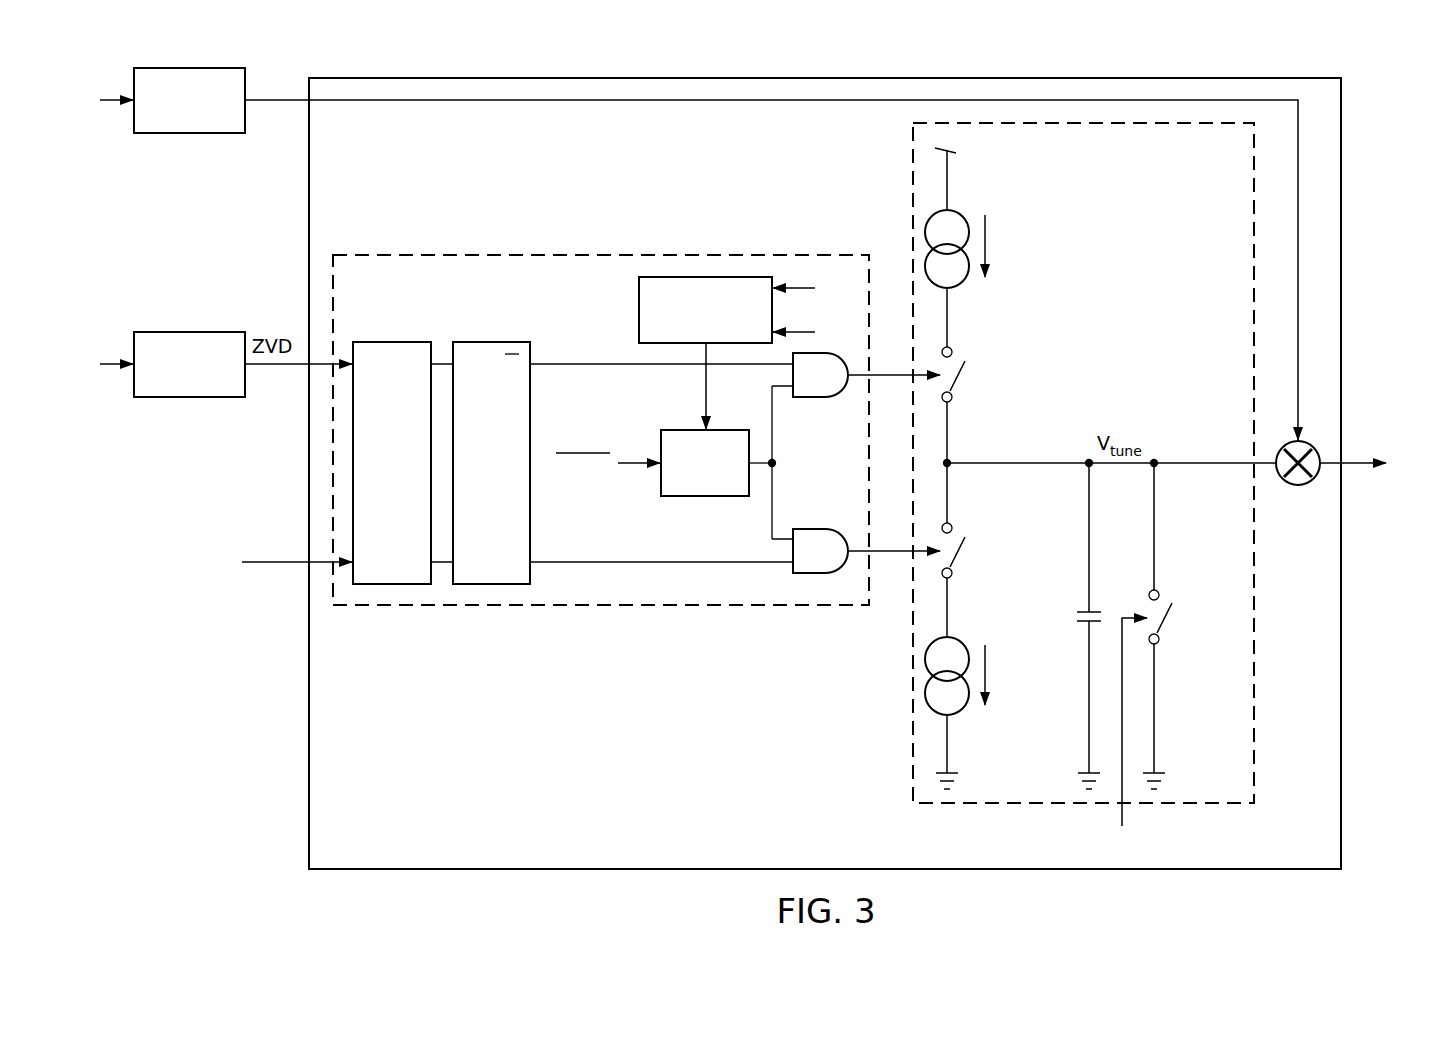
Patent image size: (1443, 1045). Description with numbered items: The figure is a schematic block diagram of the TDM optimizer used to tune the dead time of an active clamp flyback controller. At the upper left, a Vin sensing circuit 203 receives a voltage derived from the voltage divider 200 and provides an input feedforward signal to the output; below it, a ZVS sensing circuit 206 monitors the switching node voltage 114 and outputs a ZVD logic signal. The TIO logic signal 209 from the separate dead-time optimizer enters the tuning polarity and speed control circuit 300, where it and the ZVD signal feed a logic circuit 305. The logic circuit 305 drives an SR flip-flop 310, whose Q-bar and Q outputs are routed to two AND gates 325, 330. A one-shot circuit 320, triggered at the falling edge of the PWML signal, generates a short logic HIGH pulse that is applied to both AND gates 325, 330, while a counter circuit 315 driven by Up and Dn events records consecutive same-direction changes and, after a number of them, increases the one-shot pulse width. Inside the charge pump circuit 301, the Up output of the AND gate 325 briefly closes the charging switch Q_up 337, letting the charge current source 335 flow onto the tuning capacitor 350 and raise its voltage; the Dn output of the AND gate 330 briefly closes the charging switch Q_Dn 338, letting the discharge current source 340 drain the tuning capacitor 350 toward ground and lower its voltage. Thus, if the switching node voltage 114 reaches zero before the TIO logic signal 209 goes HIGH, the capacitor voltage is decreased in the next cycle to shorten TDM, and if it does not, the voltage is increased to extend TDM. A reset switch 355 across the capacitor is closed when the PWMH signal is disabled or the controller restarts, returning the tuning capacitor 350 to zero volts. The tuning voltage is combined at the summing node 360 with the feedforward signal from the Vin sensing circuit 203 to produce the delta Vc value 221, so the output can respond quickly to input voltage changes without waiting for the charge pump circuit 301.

The voltage divider 200 is at (112, 100).
The Vin sensing circuit 203 is at (188, 68).
The switching node voltage 114 is at (112, 364).
The ZVS sensing circuit 206 is at (188, 332).
The timeout (TIO) logic signal 209 is at (277, 565).
The tuning polarity and speed control circuit 300 is at (548, 253).
The logic circuit 305 is at (373, 491).
The SR flip-flop 310 is at (472, 479).
The counter circuit 315 is at (639, 309).
The one-shot circuit 320 is at (692, 496).
The AND gate 325 is at (820, 398).
The AND gate 330 is at (826, 528).
The charge pump circuit 301 is at (1143, 327).
The charge current source 335 is at (987, 221).
The charging switch Q_up 337 is at (958, 393).
The charging switch Q_Dn 338 is at (958, 569).
The discharge current source 340 is at (987, 688).
The tuning capacitor 350 is at (1078, 617).
The reset switch 355 is at (1165, 636).
The summing node 360 is at (1292, 485).
The delta Vc value 221 is at (1364, 468).